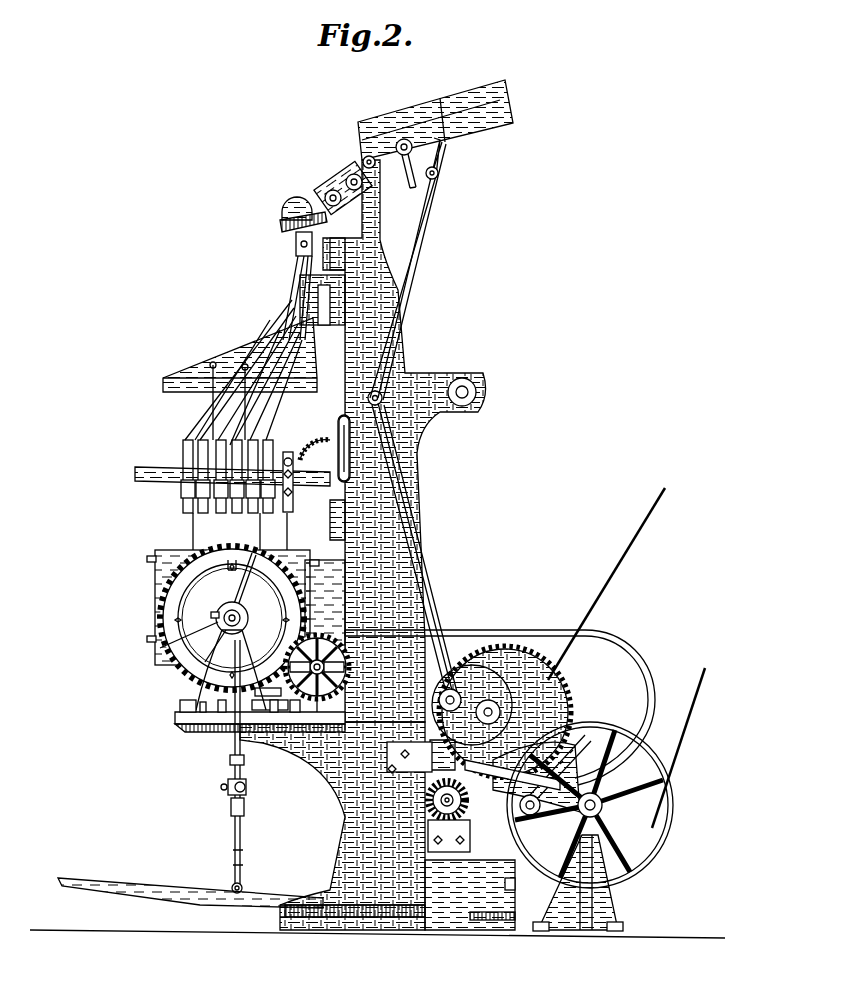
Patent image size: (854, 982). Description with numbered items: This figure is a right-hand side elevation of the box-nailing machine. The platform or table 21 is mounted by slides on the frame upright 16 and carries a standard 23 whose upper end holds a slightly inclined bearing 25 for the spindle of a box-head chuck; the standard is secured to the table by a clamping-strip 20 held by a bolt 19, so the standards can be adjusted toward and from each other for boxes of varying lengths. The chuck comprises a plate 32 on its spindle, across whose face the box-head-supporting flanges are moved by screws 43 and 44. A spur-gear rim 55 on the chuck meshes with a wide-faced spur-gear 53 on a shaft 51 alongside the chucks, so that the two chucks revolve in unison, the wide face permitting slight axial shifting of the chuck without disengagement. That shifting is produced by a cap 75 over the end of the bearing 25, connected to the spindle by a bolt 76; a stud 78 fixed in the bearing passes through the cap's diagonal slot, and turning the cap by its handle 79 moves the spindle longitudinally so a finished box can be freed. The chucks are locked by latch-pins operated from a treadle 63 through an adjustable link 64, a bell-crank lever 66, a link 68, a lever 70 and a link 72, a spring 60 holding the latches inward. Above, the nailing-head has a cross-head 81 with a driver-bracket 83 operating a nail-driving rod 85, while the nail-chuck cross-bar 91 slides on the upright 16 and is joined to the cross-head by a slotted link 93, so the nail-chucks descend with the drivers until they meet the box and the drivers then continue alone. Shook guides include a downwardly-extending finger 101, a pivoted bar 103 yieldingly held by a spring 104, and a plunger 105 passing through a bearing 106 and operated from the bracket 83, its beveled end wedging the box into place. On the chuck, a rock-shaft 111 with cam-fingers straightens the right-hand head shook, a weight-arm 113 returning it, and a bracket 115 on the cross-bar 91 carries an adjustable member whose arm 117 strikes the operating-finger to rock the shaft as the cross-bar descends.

The upright 16 is at (380, 258).
The bolt 19 is at (193, 698).
The clamping-strip 20 is at (180, 710).
The platform or table 21 is at (178, 722).
The standard 23 is at (211, 658).
The bearing 25 is at (170, 620).
The plate 32 is at (231, 578).
The screw 43 is at (147, 559).
The screw 44 is at (320, 564).
The shaft 51 is at (327, 677).
The spur-gear 53 is at (316, 634).
The spur-gear rim 55 is at (181, 548).
The spring 60 is at (230, 760).
The treadle 63 is at (130, 879).
The adjustable link 64 is at (244, 858).
The bell-crank lever 66 is at (231, 801).
The link 68 is at (232, 780).
The lever 70 is at (234, 744).
The link 72 is at (205, 662).
The cap 75 is at (160, 648).
The bolt 76 is at (243, 619).
The stud 78 is at (220, 616).
The handle 79 is at (245, 585).
The cross-head 81 is at (345, 333).
The arm or bracket 83 is at (330, 300).
The nail-driving rod 85 is at (230, 410).
The cross-bar 91 is at (340, 490).
The link 93 is at (336, 414).
The finger 101 is at (268, 531).
The bar 103 is at (290, 475).
The spring 104 is at (311, 482).
The plunger 105 is at (213, 430).
The bearing 106 is at (330, 442).
The rock-shaft 111 is at (270, 698).
The weight-arm 113 is at (268, 685).
The bracket 115 is at (332, 526).
The arm 117 is at (332, 598).